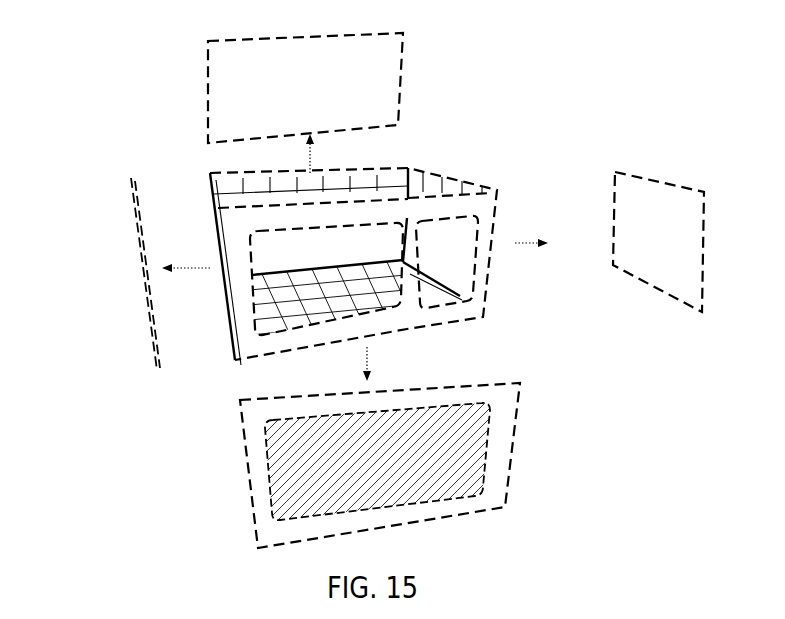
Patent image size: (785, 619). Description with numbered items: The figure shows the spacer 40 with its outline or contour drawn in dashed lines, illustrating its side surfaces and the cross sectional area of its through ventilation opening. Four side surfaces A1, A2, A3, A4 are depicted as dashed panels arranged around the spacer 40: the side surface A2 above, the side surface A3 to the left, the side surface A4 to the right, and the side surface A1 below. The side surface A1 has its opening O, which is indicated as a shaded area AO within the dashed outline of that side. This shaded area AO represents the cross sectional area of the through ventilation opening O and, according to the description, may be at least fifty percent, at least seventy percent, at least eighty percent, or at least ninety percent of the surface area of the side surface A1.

The box assembly 40 is at (97, 87).
The side surface A2 is at (209, 46).
The side surface A3 is at (131, 274).
The side surface A4 is at (658, 242).
The side surface A1 is at (240, 416).
The opening O is at (268, 468).
The shaded area AO is at (384, 473).